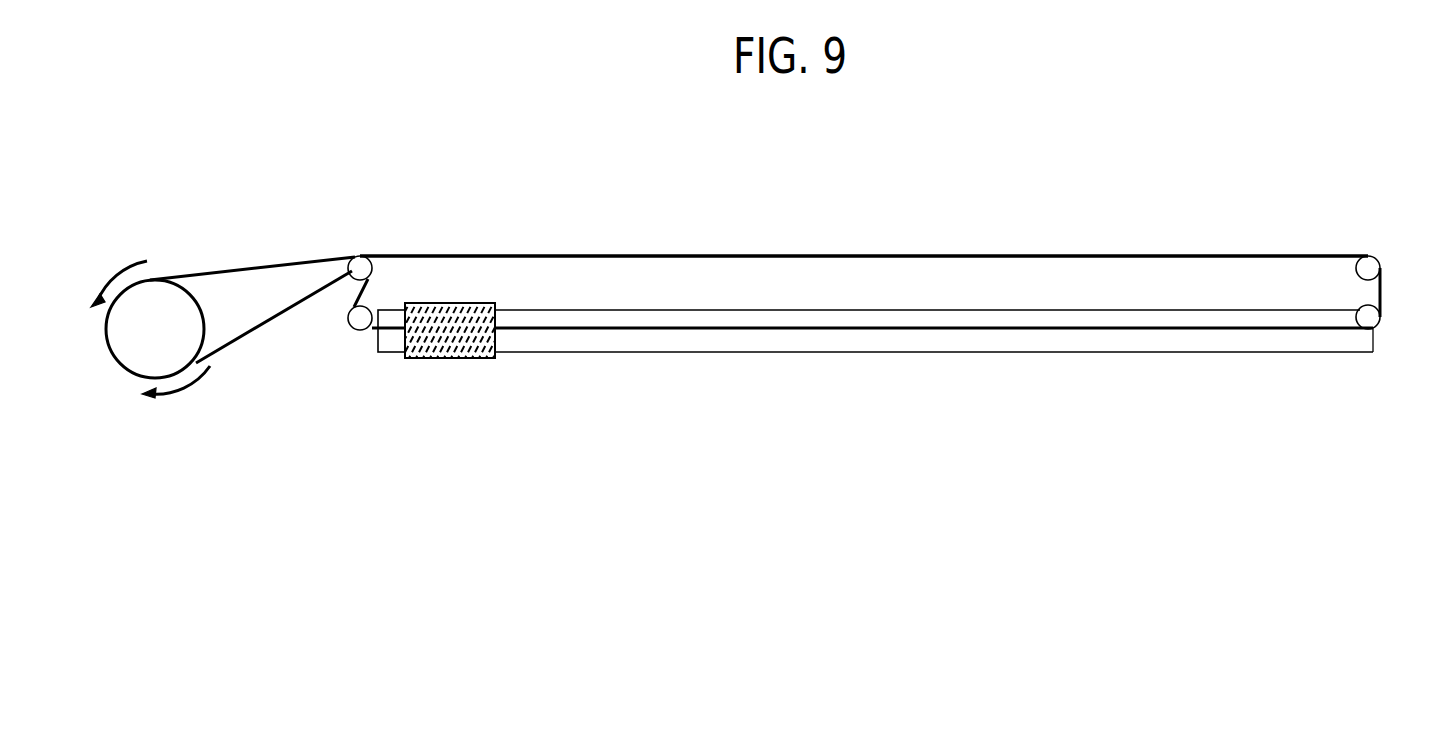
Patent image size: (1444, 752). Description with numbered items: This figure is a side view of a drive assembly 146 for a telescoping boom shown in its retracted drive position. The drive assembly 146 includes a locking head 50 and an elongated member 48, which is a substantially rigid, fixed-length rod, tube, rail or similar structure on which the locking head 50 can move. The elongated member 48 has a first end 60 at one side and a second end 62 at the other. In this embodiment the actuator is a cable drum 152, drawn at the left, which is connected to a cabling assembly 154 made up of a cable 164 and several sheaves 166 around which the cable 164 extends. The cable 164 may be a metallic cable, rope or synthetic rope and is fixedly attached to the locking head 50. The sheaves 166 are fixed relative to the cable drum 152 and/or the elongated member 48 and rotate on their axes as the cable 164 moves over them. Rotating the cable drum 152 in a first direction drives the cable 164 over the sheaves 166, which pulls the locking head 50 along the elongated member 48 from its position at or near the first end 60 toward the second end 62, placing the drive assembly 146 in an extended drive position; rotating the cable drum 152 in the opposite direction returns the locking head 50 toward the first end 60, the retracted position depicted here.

The drive assembly 146 is at (917, 208).
The cable drum 152 is at (150, 352).
The cabling assembly 154 is at (1187, 255).
The cable 164 is at (612, 255).
The sheaves 166 is at (362, 265).
The first end 60 is at (380, 354).
The locking head 50 is at (467, 343).
The elongated member 48 is at (950, 353).
The second end 62 is at (1373, 360).